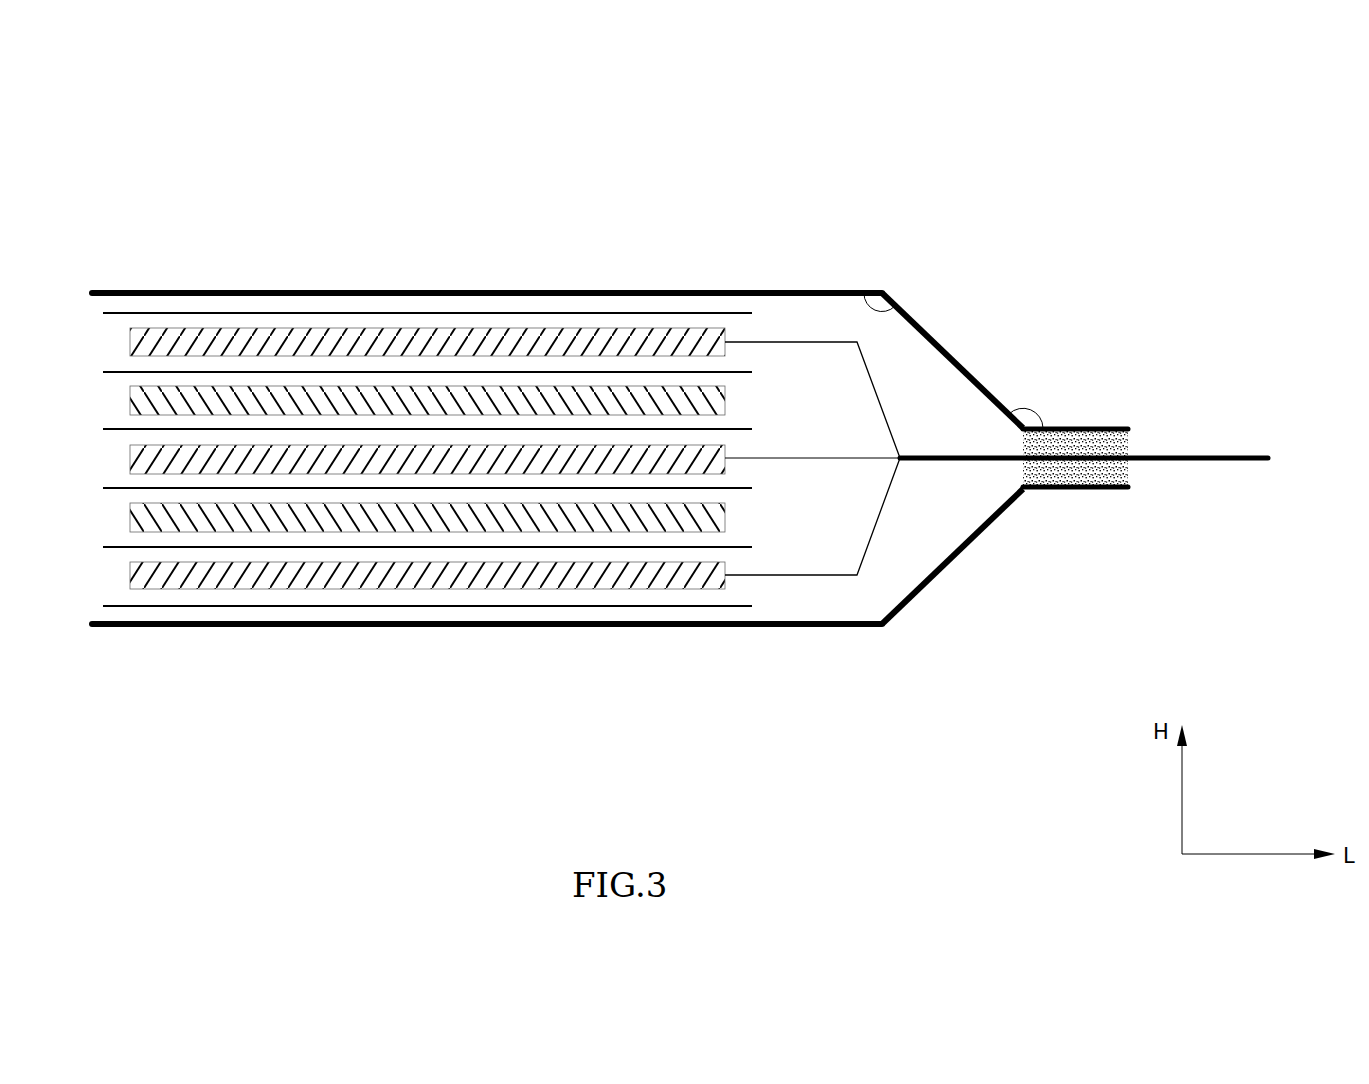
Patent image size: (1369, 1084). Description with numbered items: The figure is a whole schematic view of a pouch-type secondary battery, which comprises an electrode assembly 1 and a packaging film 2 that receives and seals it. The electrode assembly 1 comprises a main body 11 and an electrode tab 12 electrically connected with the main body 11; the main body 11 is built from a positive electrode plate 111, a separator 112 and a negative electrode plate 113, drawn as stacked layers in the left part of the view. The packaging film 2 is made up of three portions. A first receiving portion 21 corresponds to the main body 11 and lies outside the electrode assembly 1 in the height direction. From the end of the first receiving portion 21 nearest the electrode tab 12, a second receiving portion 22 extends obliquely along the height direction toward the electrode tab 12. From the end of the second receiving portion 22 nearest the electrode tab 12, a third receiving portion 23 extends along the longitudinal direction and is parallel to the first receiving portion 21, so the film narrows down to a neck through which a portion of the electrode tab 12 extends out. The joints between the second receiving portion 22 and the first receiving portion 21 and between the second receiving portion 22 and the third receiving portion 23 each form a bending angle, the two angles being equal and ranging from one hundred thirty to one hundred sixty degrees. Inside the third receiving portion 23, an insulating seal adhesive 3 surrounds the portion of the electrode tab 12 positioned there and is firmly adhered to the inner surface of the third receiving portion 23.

The electrode assembly 1 is at (90, 310).
The main body 11 is at (667, 740).
The positive electrode plate 111 is at (652, 584).
The separator 112 is at (595, 607).
The negative electrode plate 113 is at (542, 527).
The packaging film 2 is at (1110, 153).
The first receiving portion 21 is at (849, 292).
The second receiving portion 22 is at (956, 361).
The third receiving portion 23 is at (1060, 427).
The insulating seal adhesive 3 is at (1087, 555).
The electrode tab 12 is at (1183, 461).